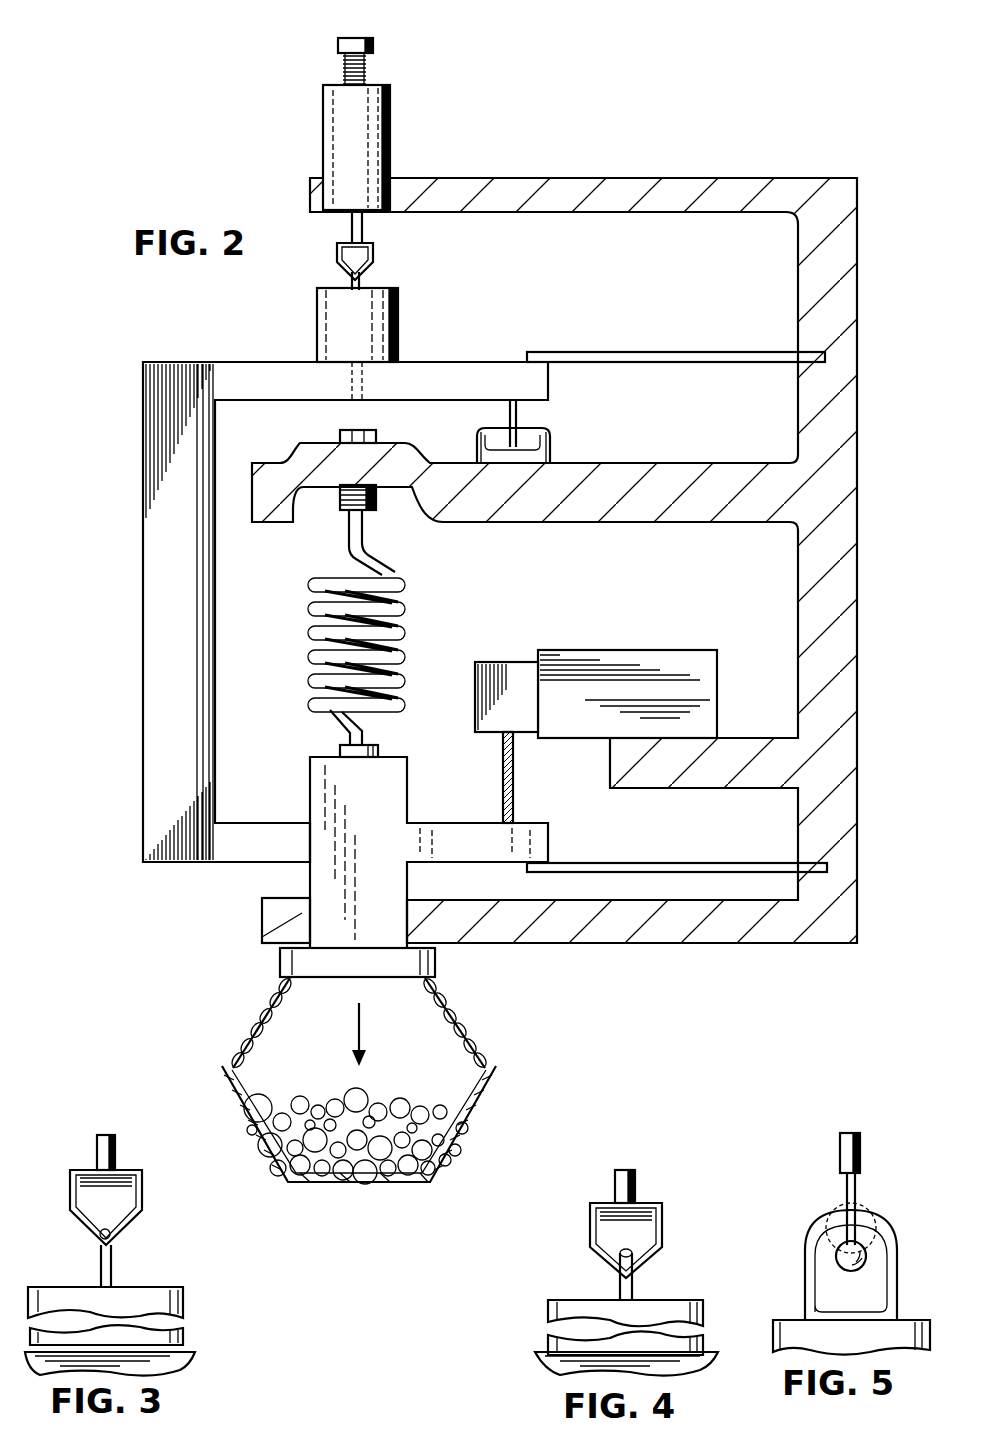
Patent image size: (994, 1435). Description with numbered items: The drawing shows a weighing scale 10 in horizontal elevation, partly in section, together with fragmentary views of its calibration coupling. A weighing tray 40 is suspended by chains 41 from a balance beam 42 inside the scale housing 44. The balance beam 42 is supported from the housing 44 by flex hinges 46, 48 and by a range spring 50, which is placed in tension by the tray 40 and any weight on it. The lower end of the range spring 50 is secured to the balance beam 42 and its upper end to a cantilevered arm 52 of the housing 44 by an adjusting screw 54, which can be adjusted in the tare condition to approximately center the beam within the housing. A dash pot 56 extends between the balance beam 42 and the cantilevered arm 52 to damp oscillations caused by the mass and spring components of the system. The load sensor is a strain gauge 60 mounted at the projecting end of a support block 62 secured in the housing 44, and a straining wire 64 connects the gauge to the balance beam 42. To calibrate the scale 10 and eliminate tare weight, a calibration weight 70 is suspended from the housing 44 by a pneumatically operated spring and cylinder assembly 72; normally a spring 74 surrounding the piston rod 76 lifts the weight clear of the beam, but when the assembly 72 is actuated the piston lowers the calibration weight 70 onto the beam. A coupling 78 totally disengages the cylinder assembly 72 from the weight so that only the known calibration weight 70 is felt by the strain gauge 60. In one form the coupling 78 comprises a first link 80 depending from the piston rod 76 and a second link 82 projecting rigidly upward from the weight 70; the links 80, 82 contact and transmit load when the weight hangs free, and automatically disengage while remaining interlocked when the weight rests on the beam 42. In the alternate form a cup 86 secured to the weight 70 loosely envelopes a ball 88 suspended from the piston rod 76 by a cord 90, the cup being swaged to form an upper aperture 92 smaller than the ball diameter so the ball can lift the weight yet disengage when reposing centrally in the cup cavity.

In FIG. 2, the scale 10 is at (588, 162).
In FIG. 2, the weighing tray 40 is at (492, 1148).
In FIG. 2, the chains 41 is at (262, 1030).
In FIG. 2, the balance beam 42 is at (155, 840).
In FIG. 3, the balance beam 42 is at (172, 1358).
In FIG. 4, the balance beam 42 is at (560, 1358).
In FIG. 2, the scale housing 44 is at (668, 188).
In FIG. 2, the flex hinge 46 is at (707, 352).
In FIG. 2, the flex hinge 48 is at (715, 863).
In FIG. 2, the range spring 50 is at (312, 652).
In FIG. 2, the cantilevered arm 52 is at (563, 512).
In FIG. 2, the adjusting screw 54 is at (376, 494).
In FIG. 2, the dash pot 56 is at (548, 457).
In FIG. 2, the strain gauge 60 is at (512, 670).
In FIG. 2, the support block 62 is at (665, 660).
In FIG. 2, the straining wire 64 is at (514, 762).
In FIG. 2, the calibration weight 70 is at (394, 346).
In FIG. 3, the calibration weight 70 is at (183, 1333).
In FIG. 4, the calibration weight 70 is at (703, 1340).
In FIG. 5, the calibration weight 70 is at (773, 1335).
In FIG. 2, the spring and cylinder assembly 72 is at (391, 148).
In FIG. 2, the spring 74 is at (367, 78).
In FIG. 2, the piston rod 76 is at (357, 38).
In FIG. 3, the piston rod 76 is at (115, 1163).
In FIG. 5, the piston rod 76 is at (842, 1155).
In FIG. 2, the coupling 78 is at (382, 270).
In FIG. 3, the coupling 78 is at (136, 1256).
In FIG. 4, the coupling 78 is at (670, 1226).
In FIG. 3, the first link 80 is at (135, 1233).
In FIG. 4, the first link 80 is at (652, 1262).
In FIG. 3, the second link 82 is at (101, 1270).
In FIG. 4, the second link 82 is at (618, 1262).
In FIG. 5, the cup 86 is at (897, 1305).
In FIG. 5, the ball 88 is at (862, 1248).
In FIG. 5, the cord 90 is at (856, 1190).
In FIG. 5, the aperture 92 is at (845, 1215).